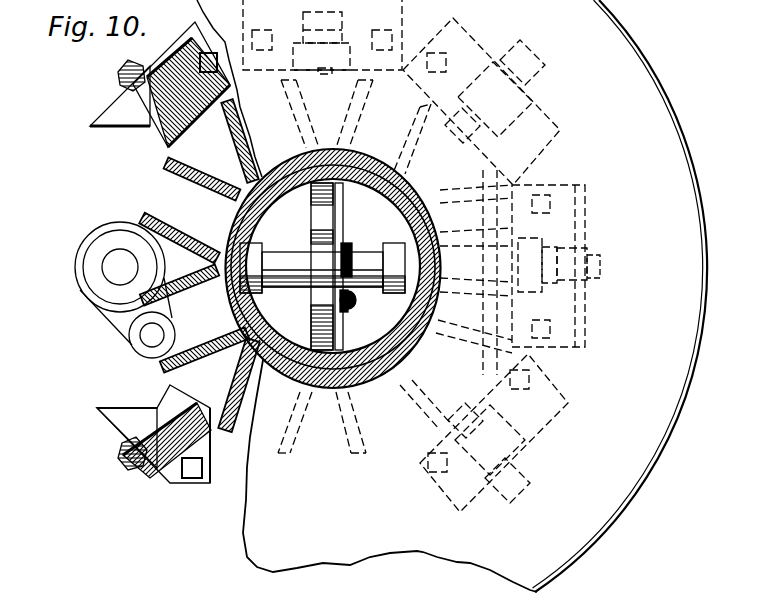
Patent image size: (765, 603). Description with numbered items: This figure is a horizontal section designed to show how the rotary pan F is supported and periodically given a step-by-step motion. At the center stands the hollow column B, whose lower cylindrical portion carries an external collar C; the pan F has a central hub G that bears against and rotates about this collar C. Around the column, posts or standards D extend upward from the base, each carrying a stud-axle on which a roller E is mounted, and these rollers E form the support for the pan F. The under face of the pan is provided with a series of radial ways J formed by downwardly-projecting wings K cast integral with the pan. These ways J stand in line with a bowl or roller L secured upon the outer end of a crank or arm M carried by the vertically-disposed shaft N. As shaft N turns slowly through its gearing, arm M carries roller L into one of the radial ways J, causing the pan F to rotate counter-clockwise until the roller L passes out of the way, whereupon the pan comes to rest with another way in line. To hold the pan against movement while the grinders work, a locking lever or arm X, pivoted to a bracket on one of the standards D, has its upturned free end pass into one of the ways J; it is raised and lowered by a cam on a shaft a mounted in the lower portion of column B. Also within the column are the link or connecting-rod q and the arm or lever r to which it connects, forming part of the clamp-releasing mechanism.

The posts or standards D is at (137, 104).
The roller E is at (161, 135).
The radial ways J is at (212, 265).
The downwardly-projecting wings K is at (194, 338).
The vertically-disposed shaft N is at (118, 270).
The crank or arm M is at (118, 310).
The bowl or roller L is at (134, 341).
The hollow column B is at (246, 222).
The external collar C is at (362, 379).
The gear wheel u is at (320, 214).
The arm or lever r is at (343, 212).
The shaft a is at (360, 257).
The link or connecting-rod q is at (357, 301).
The central hub G is at (365, 266).
The pan F is at (452, 296).
The locking lever or arm X is at (511, 272).